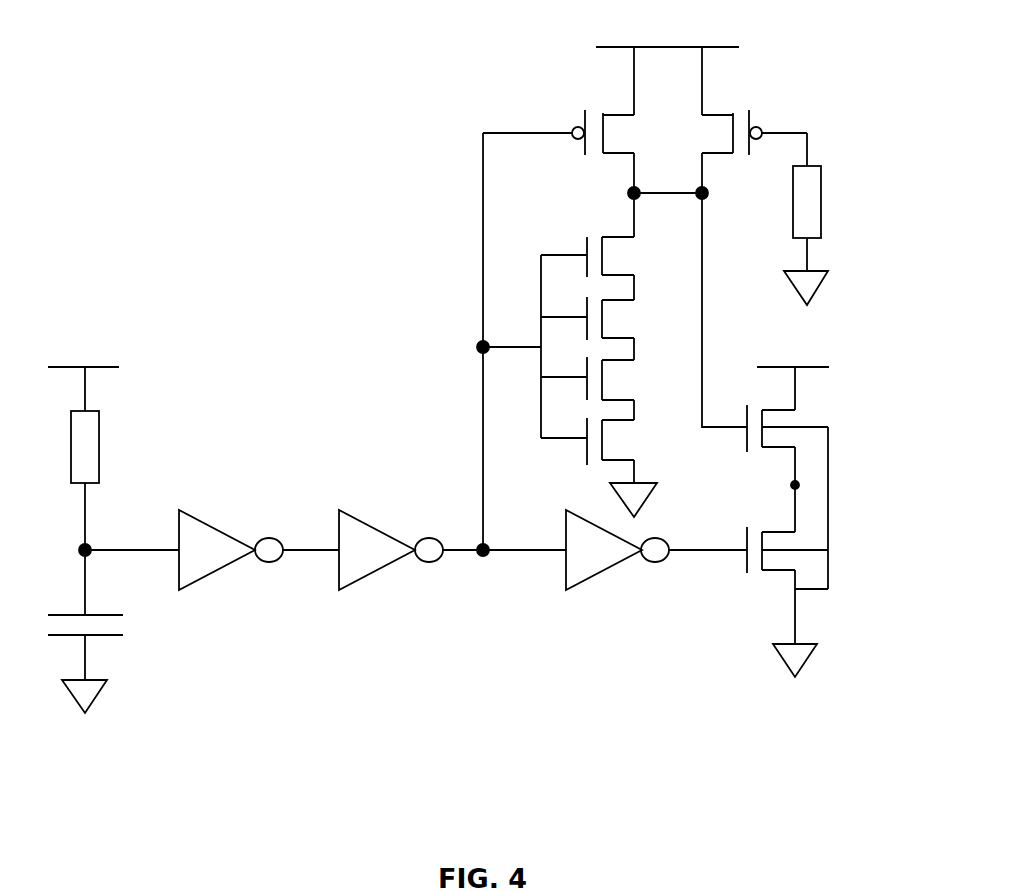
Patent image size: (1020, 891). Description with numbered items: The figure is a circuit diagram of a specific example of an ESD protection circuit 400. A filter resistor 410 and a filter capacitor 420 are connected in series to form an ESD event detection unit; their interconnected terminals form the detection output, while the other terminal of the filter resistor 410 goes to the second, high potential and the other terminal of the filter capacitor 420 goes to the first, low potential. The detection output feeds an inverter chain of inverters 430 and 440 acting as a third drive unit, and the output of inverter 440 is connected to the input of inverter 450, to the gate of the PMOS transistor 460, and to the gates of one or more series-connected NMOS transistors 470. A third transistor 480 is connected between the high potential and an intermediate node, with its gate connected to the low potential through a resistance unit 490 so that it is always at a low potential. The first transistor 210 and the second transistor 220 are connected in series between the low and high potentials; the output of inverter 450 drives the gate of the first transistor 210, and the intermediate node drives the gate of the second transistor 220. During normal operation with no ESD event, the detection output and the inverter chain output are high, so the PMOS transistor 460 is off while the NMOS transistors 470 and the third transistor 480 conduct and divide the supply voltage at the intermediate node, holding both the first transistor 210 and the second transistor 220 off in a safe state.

The ESD protection circuit 400 is at (286, 235).
The filter resistor 410 is at (99, 440).
The filter capacitor 420 is at (112, 637).
The inverter 430 is at (205, 521).
The inverter 440 is at (365, 521).
The inverter 450 is at (600, 570).
The PMOS transistor 460 is at (615, 108).
The series-connected NMOS transistors 470 is at (575, 237).
The third transistor 480 is at (733, 112).
The resistance unit 490 is at (821, 205).
The first transistor 210 is at (795, 542).
The second transistor 220 is at (790, 422).